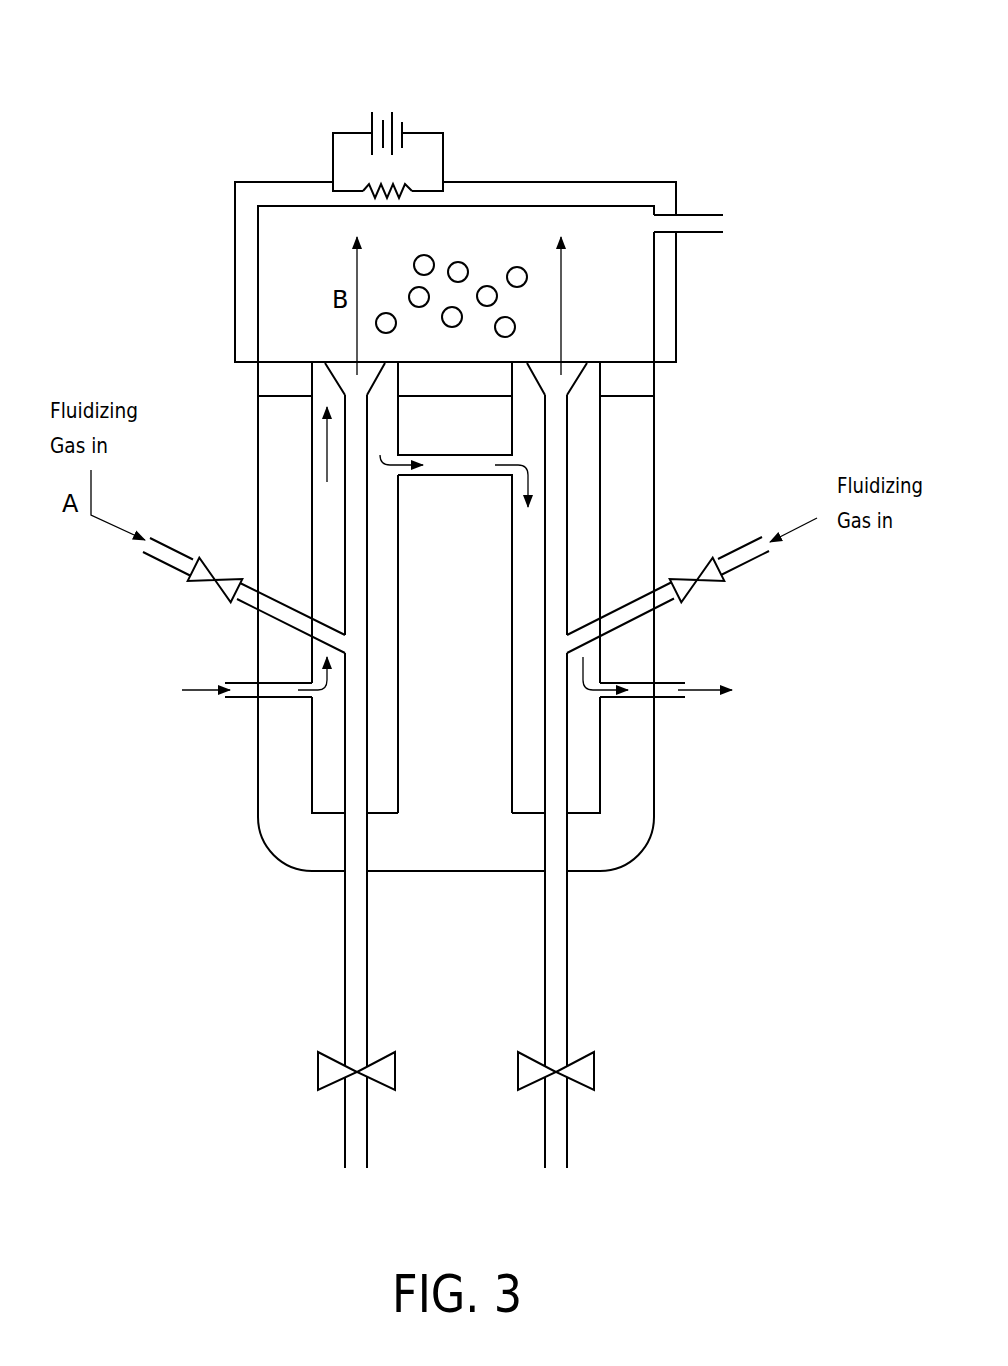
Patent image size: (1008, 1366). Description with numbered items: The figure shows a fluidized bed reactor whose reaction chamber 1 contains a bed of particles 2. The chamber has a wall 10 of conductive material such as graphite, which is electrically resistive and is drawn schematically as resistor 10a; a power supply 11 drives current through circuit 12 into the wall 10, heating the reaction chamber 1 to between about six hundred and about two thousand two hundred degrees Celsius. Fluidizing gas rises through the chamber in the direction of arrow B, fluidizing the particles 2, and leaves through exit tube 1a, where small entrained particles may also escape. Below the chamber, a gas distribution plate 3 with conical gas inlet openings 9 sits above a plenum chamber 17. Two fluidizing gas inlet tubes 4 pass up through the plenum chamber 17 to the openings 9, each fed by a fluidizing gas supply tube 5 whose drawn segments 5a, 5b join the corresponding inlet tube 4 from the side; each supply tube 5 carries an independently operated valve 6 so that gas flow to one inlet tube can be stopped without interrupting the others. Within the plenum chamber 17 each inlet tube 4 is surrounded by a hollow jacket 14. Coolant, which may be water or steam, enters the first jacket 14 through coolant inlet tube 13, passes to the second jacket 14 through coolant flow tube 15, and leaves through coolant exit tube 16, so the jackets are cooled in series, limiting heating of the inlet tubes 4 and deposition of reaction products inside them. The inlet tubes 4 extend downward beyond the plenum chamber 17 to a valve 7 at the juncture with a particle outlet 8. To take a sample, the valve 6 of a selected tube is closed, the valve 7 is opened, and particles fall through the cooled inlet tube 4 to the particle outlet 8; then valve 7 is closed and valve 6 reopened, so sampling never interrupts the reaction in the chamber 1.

The reaction chamber 1 is at (654, 296).
The exit tube 1a is at (705, 215).
The particles 2 is at (430, 256).
The gas distribution plate 3 is at (654, 378).
The fluidizing gas inlet tube 4 is at (545, 922).
The fluidizing gas supply tube 5 is at (386, 595).
The gas supply line 5a is at (155, 558).
The gas supply line downstream section 5b is at (245, 602).
The valve 6 is at (207, 557).
The valve 7 is at (518, 1068).
The particle outlet 8 is at (545, 1145).
The conical gas inlet opening 9 is at (567, 370).
The wall 10 is at (235, 282).
The resistor 10a is at (383, 188).
The power supply 11 is at (390, 110).
The circuit 12 is at (443, 150).
The coolant inlet tube 13 is at (242, 698).
The hollow jacket 14 is at (398, 617).
The coolant flow tube 15 is at (463, 477).
The coolant exit tube 16 is at (675, 698).
The plenum chamber 17 is at (654, 536).